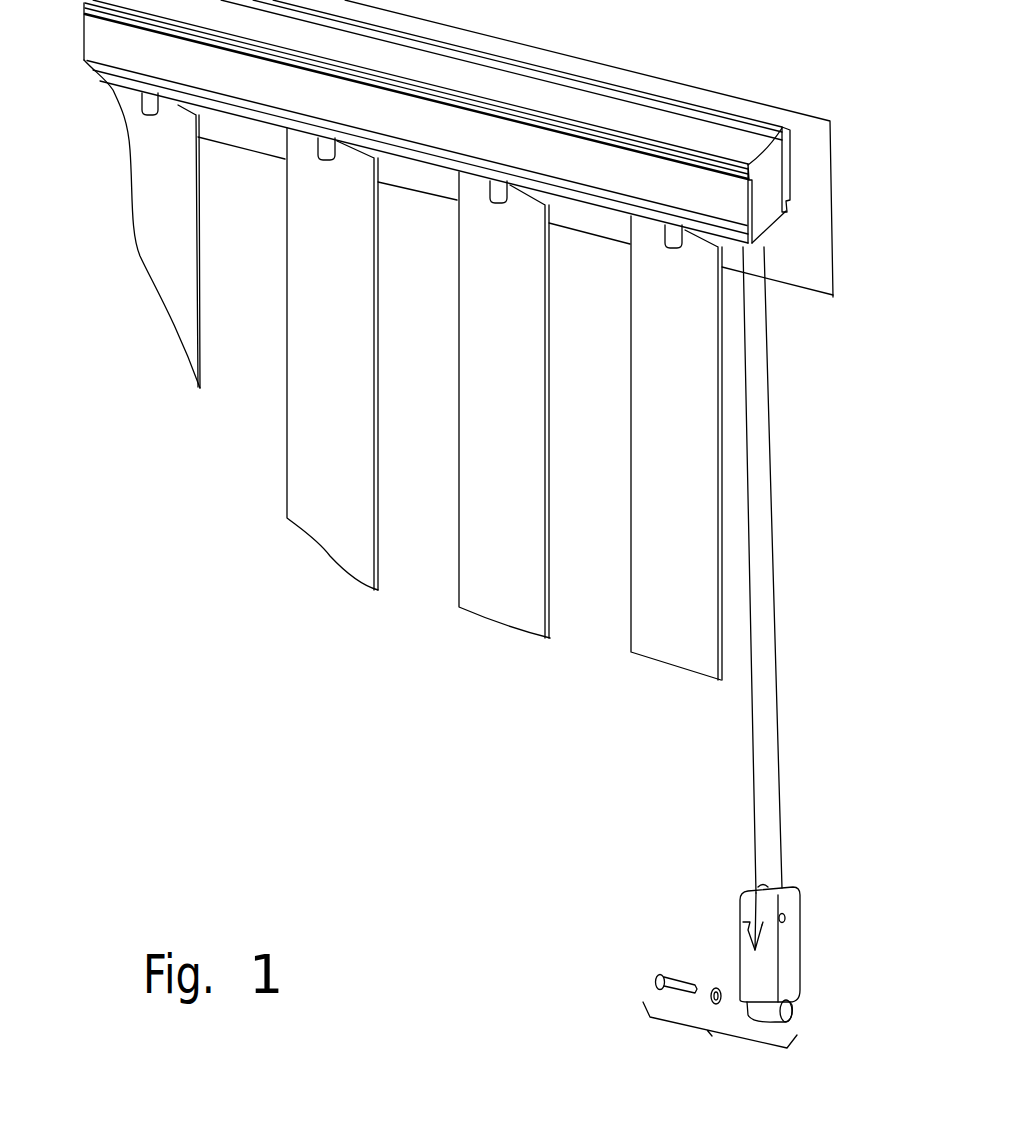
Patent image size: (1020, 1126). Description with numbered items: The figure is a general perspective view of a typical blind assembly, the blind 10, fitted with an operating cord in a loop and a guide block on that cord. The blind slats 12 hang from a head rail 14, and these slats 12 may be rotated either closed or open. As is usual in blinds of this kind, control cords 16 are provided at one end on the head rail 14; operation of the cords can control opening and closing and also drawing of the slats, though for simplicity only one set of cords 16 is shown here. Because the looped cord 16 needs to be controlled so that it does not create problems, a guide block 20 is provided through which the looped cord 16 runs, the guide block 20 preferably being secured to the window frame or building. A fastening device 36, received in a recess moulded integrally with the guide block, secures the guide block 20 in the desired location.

The blind 10 is at (470, 534).
The blind slats 12 is at (507, 592).
The head rail 14 is at (767, 194).
The control cords 16 is at (777, 608).
The guide block 20 is at (758, 970).
The fastening device 36 is at (668, 978).